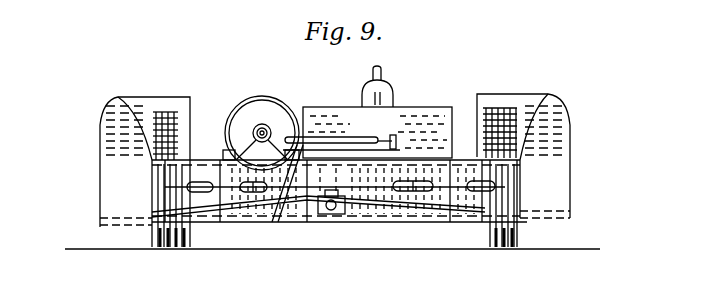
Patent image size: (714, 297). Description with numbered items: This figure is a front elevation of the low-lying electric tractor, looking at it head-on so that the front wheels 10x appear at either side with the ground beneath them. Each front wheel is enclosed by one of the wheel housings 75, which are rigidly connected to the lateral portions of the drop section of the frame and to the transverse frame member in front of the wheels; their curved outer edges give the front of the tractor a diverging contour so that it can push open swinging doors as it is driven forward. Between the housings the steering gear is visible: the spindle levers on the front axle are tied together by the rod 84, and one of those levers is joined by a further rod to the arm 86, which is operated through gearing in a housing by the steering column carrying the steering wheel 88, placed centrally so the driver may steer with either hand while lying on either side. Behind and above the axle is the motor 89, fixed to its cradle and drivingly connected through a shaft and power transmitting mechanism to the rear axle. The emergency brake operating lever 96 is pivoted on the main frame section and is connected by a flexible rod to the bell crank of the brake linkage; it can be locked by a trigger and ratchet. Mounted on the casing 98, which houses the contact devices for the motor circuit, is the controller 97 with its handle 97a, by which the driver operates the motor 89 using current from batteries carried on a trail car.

The wheel housings 75 is at (102, 160).
The front wheels 10x is at (167, 250).
The motor 89 is at (262, 97).
The steering wheel 88 is at (320, 133).
The casing 98 is at (428, 112).
The controller 97 is at (390, 92).
The handle 97a is at (381, 69).
The emergency brake operating lever 96 is at (385, 138).
The arm 86 is at (303, 220).
The rod 84 is at (380, 215).